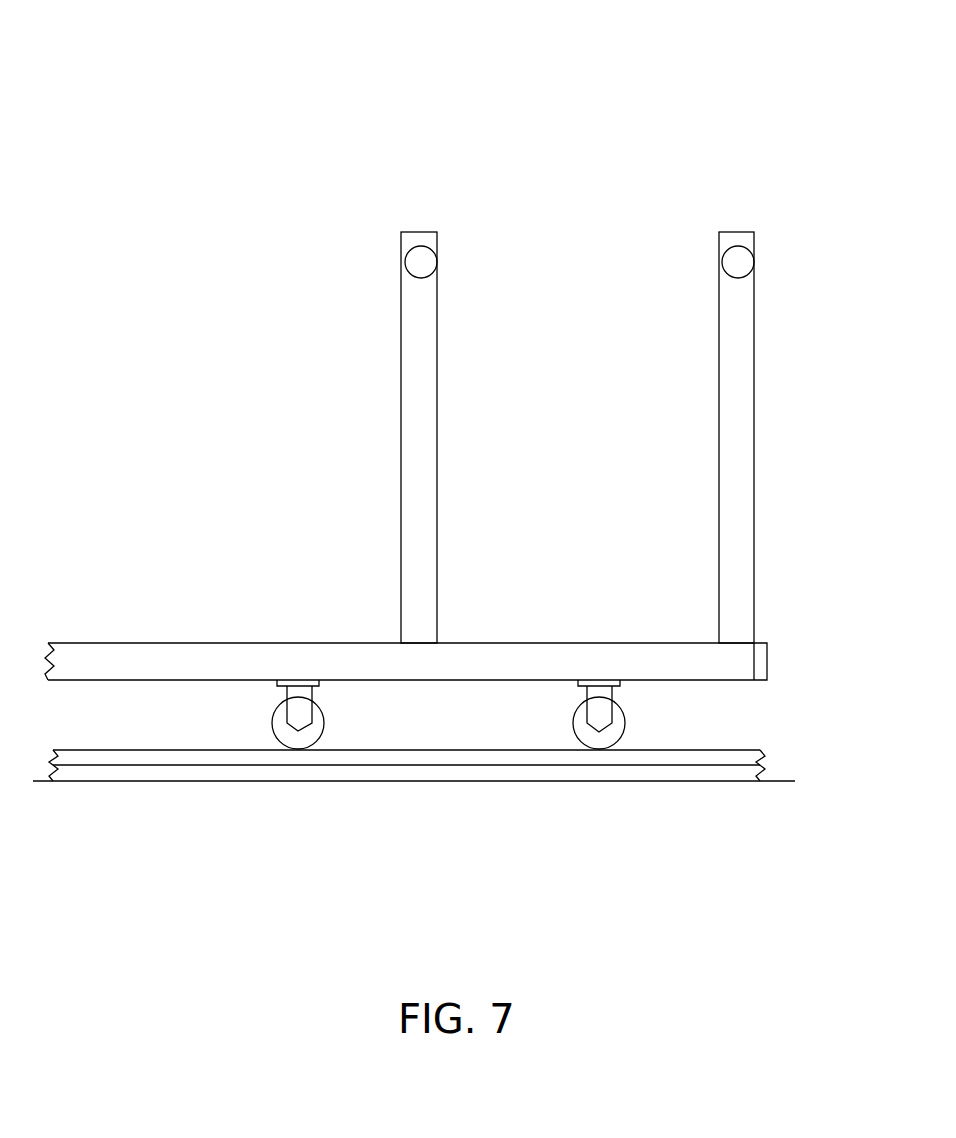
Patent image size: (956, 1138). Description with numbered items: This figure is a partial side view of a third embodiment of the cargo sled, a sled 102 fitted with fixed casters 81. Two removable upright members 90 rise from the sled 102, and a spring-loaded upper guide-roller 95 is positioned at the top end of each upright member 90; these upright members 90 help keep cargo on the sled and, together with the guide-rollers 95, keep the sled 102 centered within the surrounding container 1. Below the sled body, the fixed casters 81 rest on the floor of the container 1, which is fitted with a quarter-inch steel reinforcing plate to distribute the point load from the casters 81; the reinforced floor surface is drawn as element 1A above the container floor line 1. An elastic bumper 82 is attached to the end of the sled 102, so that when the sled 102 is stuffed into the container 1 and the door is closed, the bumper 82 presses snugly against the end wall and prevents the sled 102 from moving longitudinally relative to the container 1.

The sled 102 is at (318, 145).
The spring-loaded upper guide-rollers 95 is at (722, 265).
The removable upright members 90 is at (728, 482).
The elastic bumpers 82 is at (772, 660).
The fixed casters 81 is at (587, 741).
The rail 1A is at (737, 760).
The container 1 is at (708, 777).